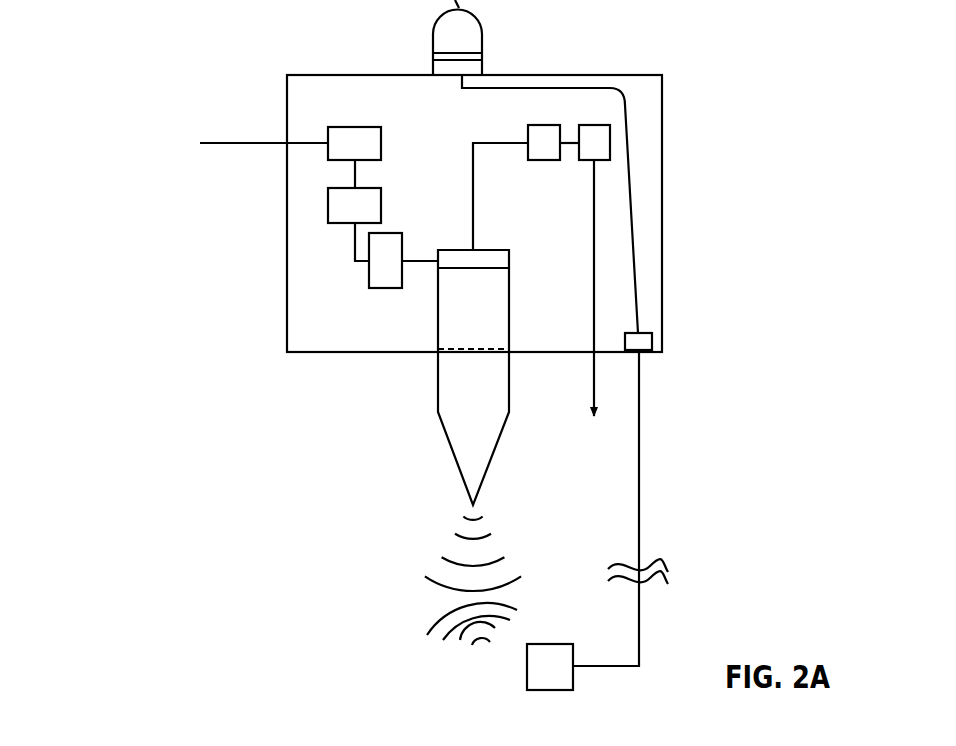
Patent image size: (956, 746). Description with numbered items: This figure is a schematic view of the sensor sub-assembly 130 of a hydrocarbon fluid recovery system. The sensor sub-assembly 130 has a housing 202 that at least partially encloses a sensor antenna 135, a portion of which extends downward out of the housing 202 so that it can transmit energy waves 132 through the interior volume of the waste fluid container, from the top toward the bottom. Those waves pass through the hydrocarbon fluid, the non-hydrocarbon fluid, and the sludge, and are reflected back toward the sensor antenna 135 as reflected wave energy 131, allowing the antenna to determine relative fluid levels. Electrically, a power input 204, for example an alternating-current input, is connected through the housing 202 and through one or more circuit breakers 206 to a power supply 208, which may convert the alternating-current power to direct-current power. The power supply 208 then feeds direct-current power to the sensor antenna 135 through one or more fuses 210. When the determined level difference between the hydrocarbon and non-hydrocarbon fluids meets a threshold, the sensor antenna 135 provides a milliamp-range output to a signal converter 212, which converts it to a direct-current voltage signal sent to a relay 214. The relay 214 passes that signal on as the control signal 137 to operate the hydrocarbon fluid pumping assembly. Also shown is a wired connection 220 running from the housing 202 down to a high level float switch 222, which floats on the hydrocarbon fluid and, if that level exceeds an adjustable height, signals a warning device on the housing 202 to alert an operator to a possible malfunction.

The sensor sub-assembly 130 is at (664, 36).
The reflected wave energy 131 is at (428, 628).
The energy waves 132 is at (455, 520).
The sensor antenna 135 is at (438, 403).
The control signal 137 is at (595, 384).
The housing 202 is at (300, 75).
The power input 204 is at (230, 143).
The circuit breakers 206 is at (382, 143).
The power supply 208 is at (382, 205).
The fuses 210 is at (388, 288).
The signal converter 212 is at (545, 125).
The relay 214 is at (592, 125).
The wired connection 220 is at (641, 422).
The high level float switch 222 is at (527, 668).